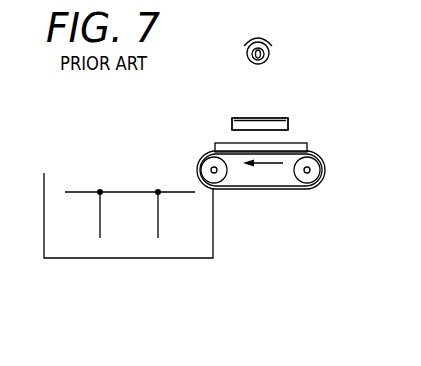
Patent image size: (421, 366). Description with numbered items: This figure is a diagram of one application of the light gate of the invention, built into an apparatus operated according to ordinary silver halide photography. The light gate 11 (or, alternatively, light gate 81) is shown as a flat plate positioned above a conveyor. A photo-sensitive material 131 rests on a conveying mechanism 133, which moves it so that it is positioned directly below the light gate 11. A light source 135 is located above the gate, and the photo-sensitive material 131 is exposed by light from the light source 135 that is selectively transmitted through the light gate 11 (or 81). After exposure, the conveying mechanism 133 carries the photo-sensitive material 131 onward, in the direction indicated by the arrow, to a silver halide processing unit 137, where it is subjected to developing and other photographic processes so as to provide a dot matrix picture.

The light source 135 is at (270, 54).
The light gate 11 is at (280, 125).
The light gate 81 is at (260, 124).
The photo-sensitive material 131 is at (307, 147).
The conveying mechanism 133 is at (326, 177).
The silver halide processing unit 137 is at (202, 238).